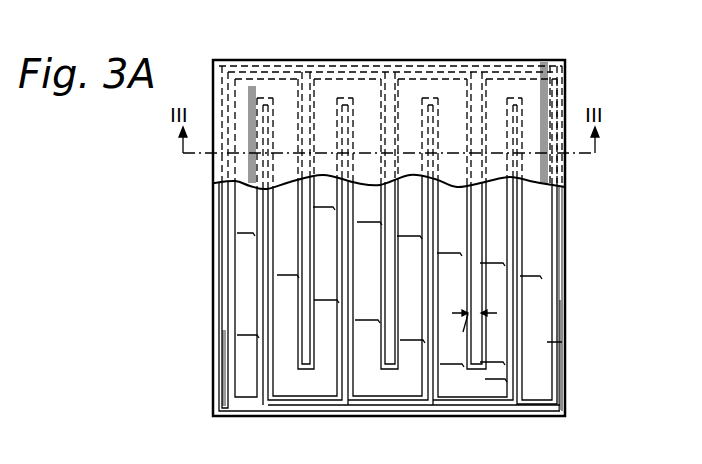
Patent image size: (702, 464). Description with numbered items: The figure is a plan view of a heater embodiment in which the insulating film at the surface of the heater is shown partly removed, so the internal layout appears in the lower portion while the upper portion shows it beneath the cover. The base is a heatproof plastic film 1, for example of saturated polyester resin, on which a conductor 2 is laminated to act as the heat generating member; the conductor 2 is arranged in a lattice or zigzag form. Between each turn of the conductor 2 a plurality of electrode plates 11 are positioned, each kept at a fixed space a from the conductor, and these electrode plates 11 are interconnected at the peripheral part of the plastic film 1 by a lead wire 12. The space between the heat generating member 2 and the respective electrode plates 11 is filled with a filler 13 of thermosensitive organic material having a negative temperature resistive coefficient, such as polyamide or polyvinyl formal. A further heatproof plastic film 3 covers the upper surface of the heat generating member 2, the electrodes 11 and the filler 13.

The heatproof plastic film 1 is at (558, 414).
The conductor 2 is at (533, 388).
The further heatproof plastic film 3 is at (545, 70).
The electrode plate 11 is at (415, 430).
The lead wire 12 is at (447, 432).
The filler 13 is at (495, 400).
The fixed space a is at (473, 331).